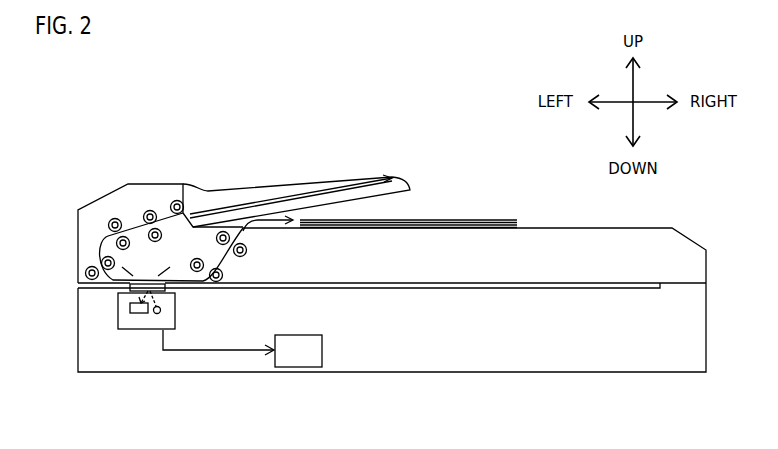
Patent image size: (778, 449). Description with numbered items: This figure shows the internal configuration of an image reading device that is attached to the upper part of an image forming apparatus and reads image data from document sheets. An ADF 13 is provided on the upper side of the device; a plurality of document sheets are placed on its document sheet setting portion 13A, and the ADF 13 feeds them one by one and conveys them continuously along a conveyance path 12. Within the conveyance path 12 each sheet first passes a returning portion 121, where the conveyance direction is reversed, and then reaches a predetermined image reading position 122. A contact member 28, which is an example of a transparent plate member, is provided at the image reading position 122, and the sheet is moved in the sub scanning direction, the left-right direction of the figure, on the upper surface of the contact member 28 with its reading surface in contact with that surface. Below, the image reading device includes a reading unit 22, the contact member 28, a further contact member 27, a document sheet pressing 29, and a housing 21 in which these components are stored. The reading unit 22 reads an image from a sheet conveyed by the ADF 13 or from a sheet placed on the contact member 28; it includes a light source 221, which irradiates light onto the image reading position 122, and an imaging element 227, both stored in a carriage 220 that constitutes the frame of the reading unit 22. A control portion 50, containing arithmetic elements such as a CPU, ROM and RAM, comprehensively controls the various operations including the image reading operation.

The conveyance path 12 is at (130, 217).
The ADF 13 is at (78, 225).
The document sheet setting portion 13A is at (260, 190).
The returning portion 121 is at (100, 254).
The image reading position 122 is at (151, 273).
The housing 21 is at (706, 327).
The reading unit 22 is at (94, 359).
The carriage 220 is at (117, 315).
The light source 221 is at (157, 314).
The imaging element 227 is at (140, 313).
The contact member 27 is at (343, 290).
The contact member 28 is at (160, 291).
The document sheet pressing 29 is at (535, 227).
The control portion 50 is at (322, 352).